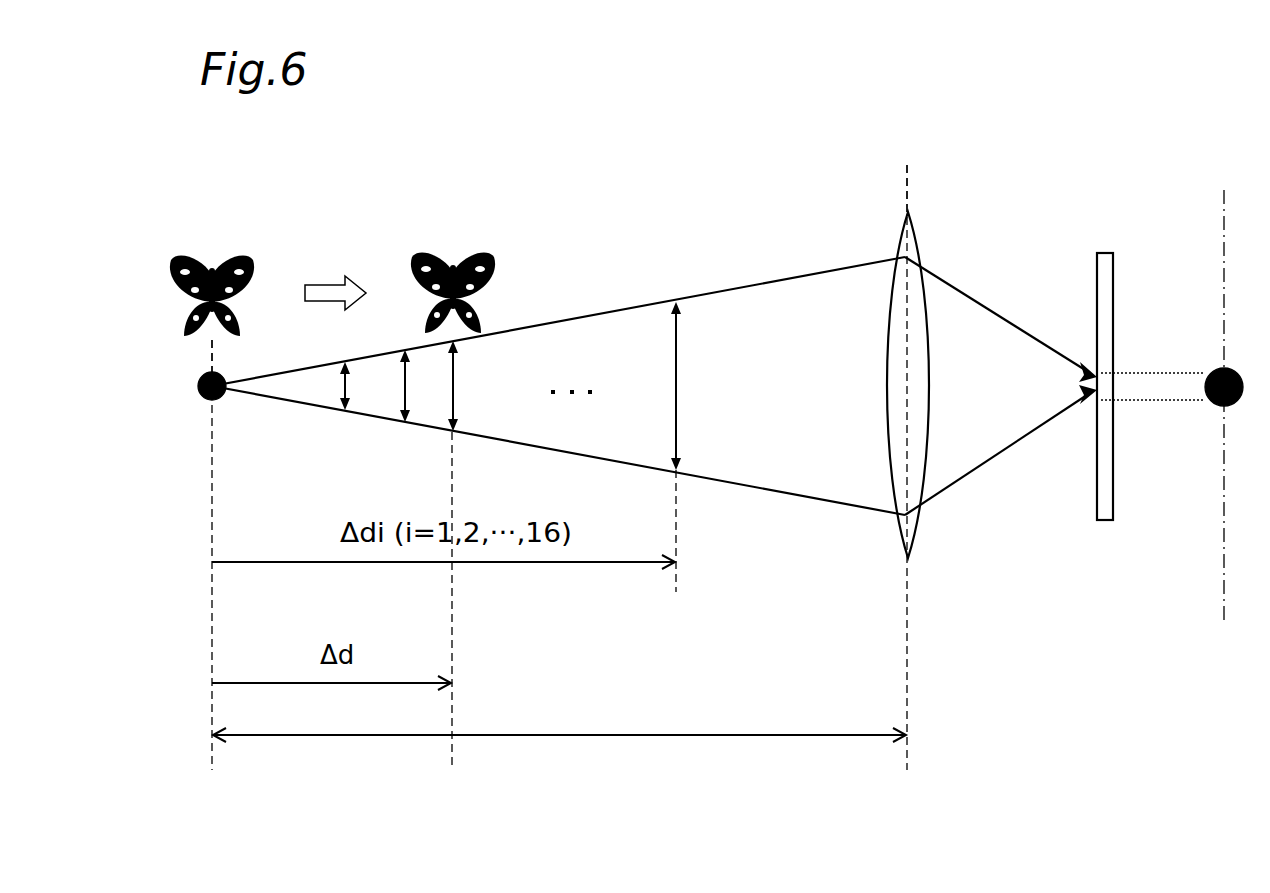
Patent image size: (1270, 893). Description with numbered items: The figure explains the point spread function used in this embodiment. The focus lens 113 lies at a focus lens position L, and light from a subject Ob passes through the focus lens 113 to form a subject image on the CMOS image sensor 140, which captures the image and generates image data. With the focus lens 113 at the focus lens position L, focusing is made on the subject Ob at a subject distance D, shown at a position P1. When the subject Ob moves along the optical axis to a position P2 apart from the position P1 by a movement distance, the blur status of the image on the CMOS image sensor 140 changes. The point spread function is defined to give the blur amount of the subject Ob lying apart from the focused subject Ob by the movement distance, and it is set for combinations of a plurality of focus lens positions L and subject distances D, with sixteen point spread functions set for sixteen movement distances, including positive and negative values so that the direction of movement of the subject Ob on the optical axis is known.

The subject Ob is at (171, 270).
The position P1 is at (207, 286).
The position P2 is at (453, 267).
The focus lens position L is at (908, 167).
The focus lens 113 is at (918, 247).
The CMOS image sensor 140 is at (1108, 252).
The subject distance D is at (559, 718).